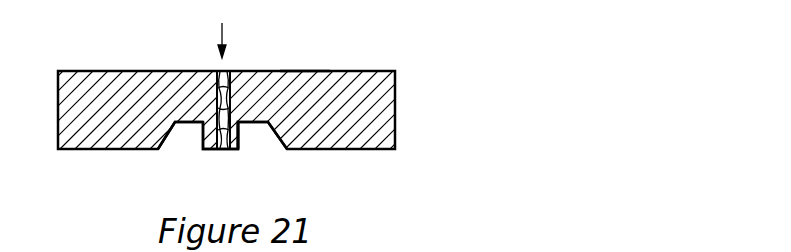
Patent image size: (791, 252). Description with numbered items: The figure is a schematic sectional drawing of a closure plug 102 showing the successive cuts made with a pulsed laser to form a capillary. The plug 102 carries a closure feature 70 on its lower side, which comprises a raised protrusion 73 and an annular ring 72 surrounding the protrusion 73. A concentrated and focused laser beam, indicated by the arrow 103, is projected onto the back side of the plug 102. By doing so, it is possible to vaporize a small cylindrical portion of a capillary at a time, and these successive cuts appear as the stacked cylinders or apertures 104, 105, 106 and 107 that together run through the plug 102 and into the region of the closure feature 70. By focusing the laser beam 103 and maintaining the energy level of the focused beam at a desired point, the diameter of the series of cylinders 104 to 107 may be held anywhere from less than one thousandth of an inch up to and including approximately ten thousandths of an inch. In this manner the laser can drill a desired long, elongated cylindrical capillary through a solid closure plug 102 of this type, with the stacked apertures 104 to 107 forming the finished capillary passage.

The closure plug 102 is at (373, 70).
The laser beam 103 is at (225, 49).
The stacked cylinder aperture 104 is at (213, 72).
The stacked cylinder aperture 105 is at (215, 97).
The stacked cylinder aperture 106 is at (290, 70).
The stacked cylinder aperture 107 is at (228, 137).
The closure feature 70 is at (233, 155).
The annular ring 72 is at (197, 124).
The raised protrusion 73 is at (213, 151).